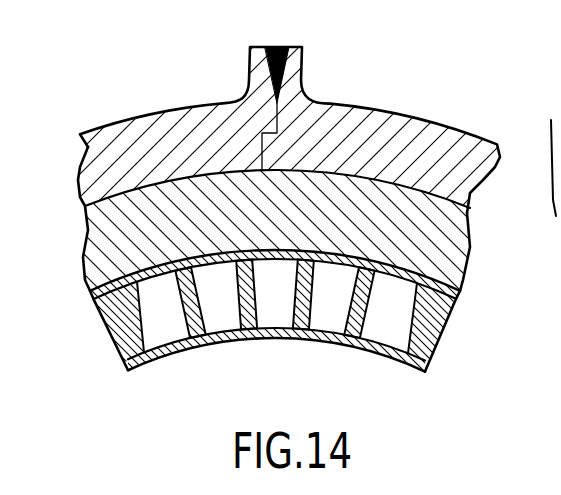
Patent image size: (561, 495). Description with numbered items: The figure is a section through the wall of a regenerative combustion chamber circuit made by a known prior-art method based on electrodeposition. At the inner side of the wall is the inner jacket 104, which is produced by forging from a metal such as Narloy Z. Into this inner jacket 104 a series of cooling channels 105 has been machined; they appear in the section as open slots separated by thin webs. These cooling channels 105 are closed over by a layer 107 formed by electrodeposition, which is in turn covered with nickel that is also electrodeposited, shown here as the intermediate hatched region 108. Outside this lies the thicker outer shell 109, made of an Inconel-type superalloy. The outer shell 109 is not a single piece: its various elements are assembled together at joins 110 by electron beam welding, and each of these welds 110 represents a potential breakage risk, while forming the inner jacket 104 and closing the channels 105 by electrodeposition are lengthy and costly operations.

The inner jacket 104 is at (238, 338).
The cooling channels 105 is at (148, 312).
The layer 107 is at (463, 292).
The inner hatched ring section 108 is at (140, 220).
The outer shell 109 is at (340, 123).
The joins 110 is at (277, 46).